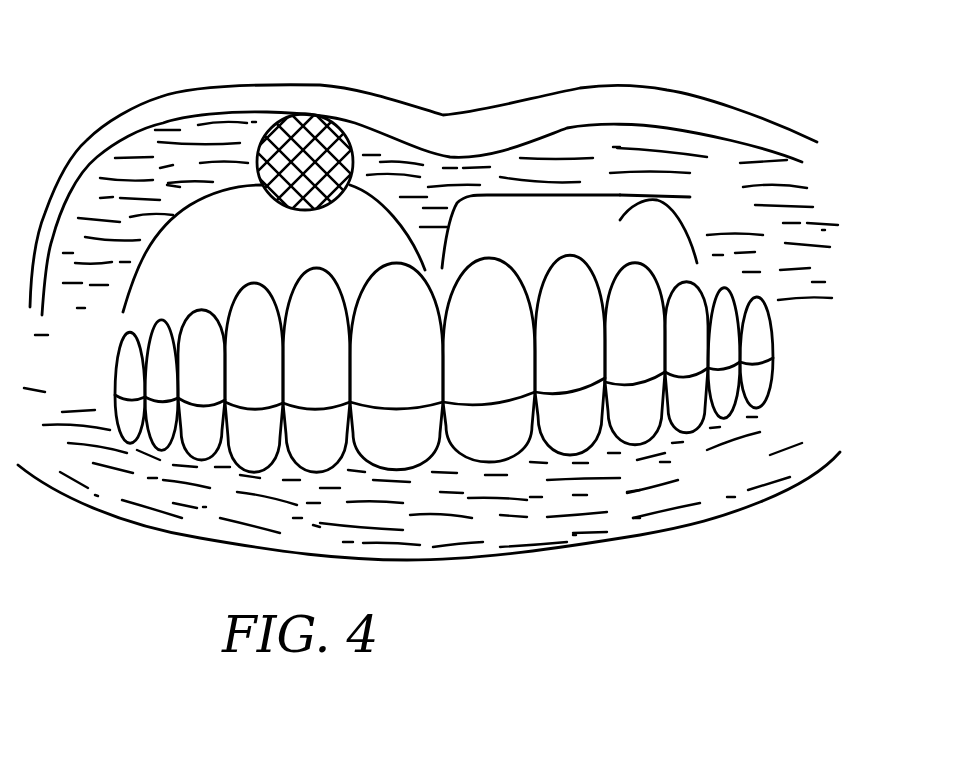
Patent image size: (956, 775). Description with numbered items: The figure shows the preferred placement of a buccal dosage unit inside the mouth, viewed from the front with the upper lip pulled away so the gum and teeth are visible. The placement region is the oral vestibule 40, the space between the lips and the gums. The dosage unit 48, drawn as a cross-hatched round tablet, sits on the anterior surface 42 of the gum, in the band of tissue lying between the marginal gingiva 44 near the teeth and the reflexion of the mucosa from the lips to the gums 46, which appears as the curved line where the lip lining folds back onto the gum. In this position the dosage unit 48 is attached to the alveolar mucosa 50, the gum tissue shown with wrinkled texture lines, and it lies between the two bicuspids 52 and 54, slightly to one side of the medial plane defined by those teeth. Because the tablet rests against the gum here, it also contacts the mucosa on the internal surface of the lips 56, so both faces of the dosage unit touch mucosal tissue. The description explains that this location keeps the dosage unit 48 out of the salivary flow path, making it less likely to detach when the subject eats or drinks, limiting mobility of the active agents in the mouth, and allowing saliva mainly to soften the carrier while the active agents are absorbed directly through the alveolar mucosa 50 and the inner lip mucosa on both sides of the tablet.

The oral vestibule 40 is at (813, 338).
The anterior surface of the gum 42 is at (455, 197).
The marginal gingiva 44 is at (675, 223).
The reflexion of the mucosa from the lips to the gums 46 is at (563, 143).
The dosage unit 48 is at (337, 122).
The alveolar mucosa 50 is at (213, 152).
The bicuspid 52 is at (248, 367).
The bicuspid 54 is at (637, 303).
The lips 56 is at (460, 132).